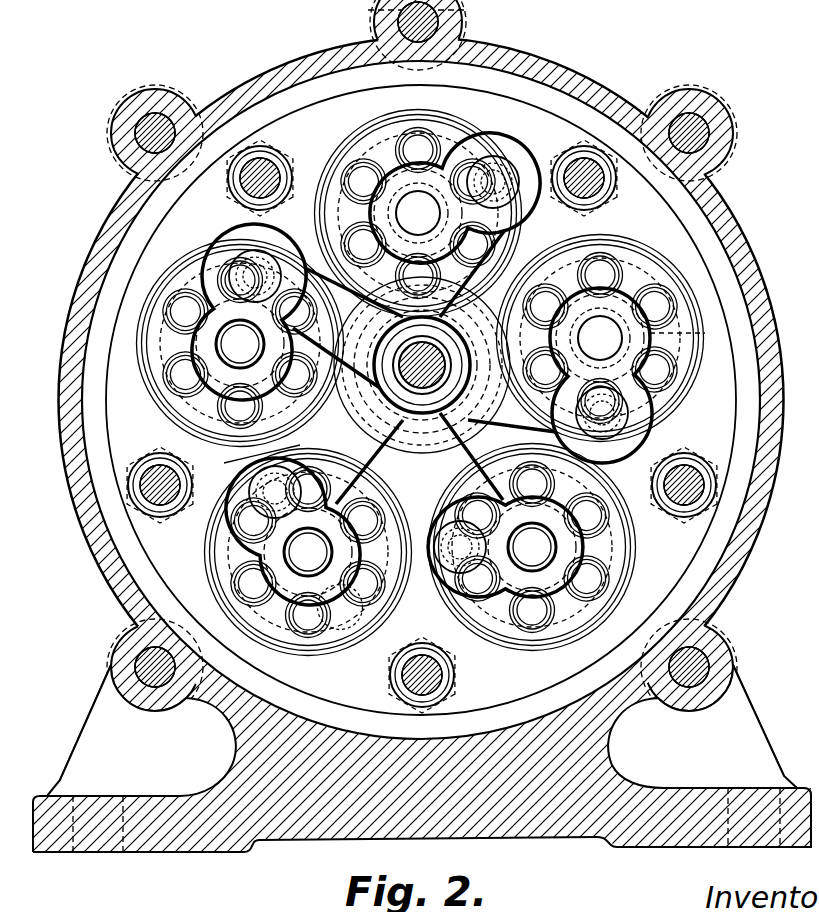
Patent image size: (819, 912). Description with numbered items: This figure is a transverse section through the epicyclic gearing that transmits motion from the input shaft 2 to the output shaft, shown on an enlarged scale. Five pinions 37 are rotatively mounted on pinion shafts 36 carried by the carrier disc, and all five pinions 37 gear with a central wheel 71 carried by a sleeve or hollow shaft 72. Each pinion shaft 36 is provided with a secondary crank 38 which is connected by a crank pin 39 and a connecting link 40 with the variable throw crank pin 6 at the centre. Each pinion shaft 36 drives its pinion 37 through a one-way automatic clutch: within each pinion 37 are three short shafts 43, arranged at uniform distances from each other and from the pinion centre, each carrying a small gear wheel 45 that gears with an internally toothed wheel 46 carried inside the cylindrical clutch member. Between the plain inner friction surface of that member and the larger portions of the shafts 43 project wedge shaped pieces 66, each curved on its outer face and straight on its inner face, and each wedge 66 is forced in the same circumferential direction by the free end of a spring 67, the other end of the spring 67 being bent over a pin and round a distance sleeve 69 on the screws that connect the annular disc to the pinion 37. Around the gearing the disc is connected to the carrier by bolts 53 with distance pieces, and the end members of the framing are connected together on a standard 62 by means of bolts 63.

The input shaft 2 is at (422, 395).
The variable throw crank pin 6 is at (400, 373).
The pinion shaft 36 is at (762, 225).
The pinion 37 is at (400, 135).
The secondary crank 38 is at (445, 166).
The crank pin 39 is at (490, 185).
The connecting link 40 is at (320, 263).
The short shaft 43 is at (245, 495).
The small gear wheel 45 is at (337, 163).
The internally toothed wheel 46 is at (386, 140).
The bolt 53 is at (152, 458).
The standard 62 is at (240, 560).
The bolt 63 is at (158, 112).
The wedge shaped piece 66 is at (230, 680).
The spring 67 is at (285, 605).
The distance sleeve 69 is at (325, 628).
The central wheel 71 is at (244, 460).
The hollow shaft 72 is at (440, 436).